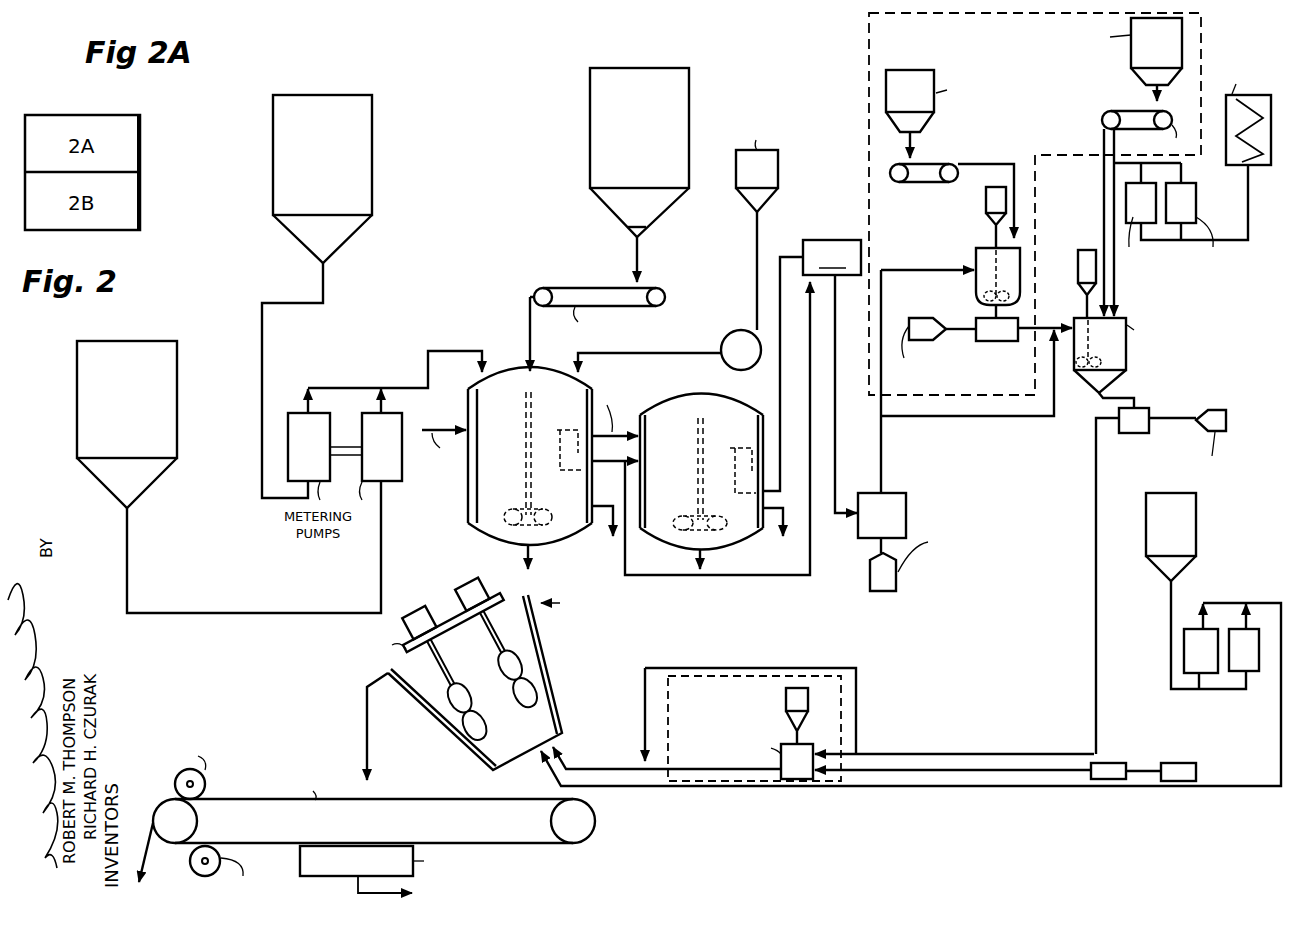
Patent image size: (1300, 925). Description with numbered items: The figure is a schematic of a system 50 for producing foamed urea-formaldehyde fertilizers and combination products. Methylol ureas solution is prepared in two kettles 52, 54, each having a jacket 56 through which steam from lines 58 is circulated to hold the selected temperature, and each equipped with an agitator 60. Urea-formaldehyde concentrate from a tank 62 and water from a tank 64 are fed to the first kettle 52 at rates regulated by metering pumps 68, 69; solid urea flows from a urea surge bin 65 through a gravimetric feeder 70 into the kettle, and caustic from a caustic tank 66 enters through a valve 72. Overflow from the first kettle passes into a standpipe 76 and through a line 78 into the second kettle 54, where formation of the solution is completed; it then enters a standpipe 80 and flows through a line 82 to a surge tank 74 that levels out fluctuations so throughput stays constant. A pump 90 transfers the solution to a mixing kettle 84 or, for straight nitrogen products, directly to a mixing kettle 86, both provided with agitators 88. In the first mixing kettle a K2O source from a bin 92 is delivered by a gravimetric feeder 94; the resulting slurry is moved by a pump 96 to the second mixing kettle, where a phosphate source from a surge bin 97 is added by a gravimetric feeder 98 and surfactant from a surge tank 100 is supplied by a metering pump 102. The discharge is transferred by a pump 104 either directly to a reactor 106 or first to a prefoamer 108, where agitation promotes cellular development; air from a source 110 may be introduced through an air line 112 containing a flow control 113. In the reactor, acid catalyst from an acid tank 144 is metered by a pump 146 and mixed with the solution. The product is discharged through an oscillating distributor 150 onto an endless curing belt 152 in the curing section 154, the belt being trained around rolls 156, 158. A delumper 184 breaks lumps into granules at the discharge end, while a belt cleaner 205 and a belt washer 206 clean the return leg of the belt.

The system 50 is at (532, 57).
The first kettle 52 is at (466, 503).
The second kettle 54 is at (700, 393).
The jacket 56 is at (468, 488).
The steam line 58 is at (619, 456).
The agitator 60 is at (548, 525).
The urea-formaldehyde concentrate tank 62 is at (375, 118).
The water tank 64 is at (75, 355).
The urea surge bin 65 is at (590, 101).
The caustic tank 66 is at (775, 166).
The metering pump 68 is at (390, 482).
The metering pump 69 is at (293, 414).
The gravimetric feeder 70 is at (596, 286).
The valve 72 is at (740, 330).
The surge tank 74 is at (743, 393).
The standpipe 76 is at (568, 417).
The line 78 is at (616, 470).
The standpipe 80 is at (746, 448).
The line 82 is at (779, 388).
The mixing kettle 84 is at (976, 257).
The mixing kettle 86 is at (1126, 365).
The agitator 88 is at (981, 296).
The pump 90 is at (900, 497).
The bin 92 is at (913, 67).
The gravimetric feeder 94 is at (947, 163).
The pump 96 is at (1017, 342).
The surge bin 97 is at (1131, 60).
The gravimetric feeder 98 is at (1128, 111).
The surge tank 100 is at (1253, 165).
The metering pump 102 is at (1184, 203).
The pump 104 is at (1149, 410).
The reactor 106 is at (527, 646).
The prefoamer 108 is at (800, 780).
The air source 110 is at (1198, 769).
The air line 112 is at (998, 769).
The flow control 113 is at (1117, 762).
The acid tank 144 is at (1196, 528).
The metering pump 146 is at (1243, 640).
The distributor 150 is at (368, 756).
The curing belt 152 is at (414, 798).
The curing section 154 is at (215, 766).
The roll 156 is at (596, 821).
The roll 158 is at (198, 821).
The delumper 184 is at (175, 785).
The belt cleaner 205 is at (190, 864).
The belt washer 206 is at (350, 870).